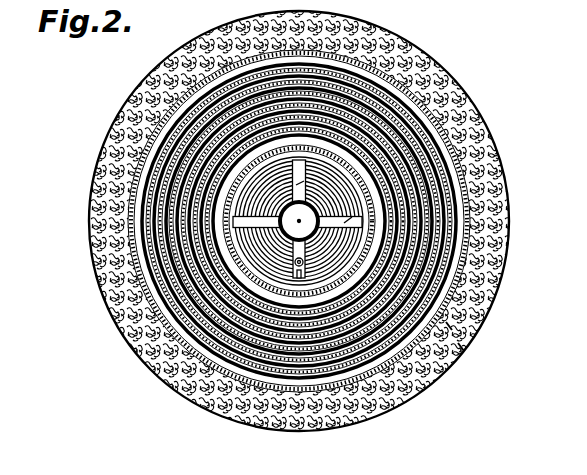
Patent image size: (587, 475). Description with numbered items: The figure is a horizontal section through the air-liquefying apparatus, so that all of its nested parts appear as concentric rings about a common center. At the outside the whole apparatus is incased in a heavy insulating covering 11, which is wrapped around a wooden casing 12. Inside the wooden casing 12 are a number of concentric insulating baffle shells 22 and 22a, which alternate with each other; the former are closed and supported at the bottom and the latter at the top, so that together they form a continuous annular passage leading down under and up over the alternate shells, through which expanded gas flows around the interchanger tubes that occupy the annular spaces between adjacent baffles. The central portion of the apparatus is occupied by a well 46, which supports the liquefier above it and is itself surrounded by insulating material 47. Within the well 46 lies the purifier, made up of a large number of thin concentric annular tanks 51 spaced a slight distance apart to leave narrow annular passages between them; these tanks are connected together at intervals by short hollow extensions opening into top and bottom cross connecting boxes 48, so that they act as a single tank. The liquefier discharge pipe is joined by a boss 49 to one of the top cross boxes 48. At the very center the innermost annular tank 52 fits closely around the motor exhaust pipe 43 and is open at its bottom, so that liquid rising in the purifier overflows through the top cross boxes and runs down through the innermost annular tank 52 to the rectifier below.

The insulating covering 11 is at (312, 229).
The wooden casing 12 is at (228, 247).
The insulating baffle shells 22 is at (200, 213).
The insulating baffle shells 22a is at (217, 175).
The motor exhaust pipe 43 is at (348, 220).
The well 46 is at (240, 257).
The insulating material 47 is at (232, 250).
The cross connecting boxes 48 is at (304, 183).
The boss 49 is at (260, 257).
The annular tanks 51 is at (461, 347).
The innermost annular tank 52 is at (318, 262).